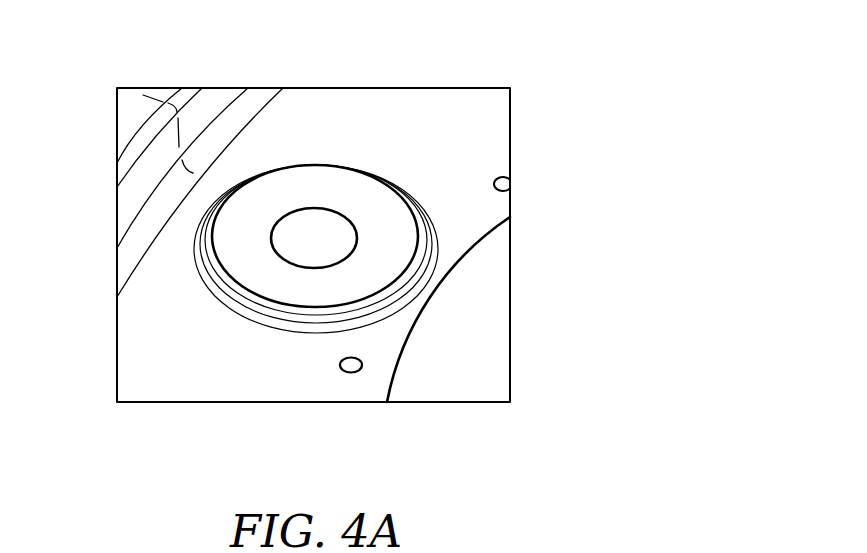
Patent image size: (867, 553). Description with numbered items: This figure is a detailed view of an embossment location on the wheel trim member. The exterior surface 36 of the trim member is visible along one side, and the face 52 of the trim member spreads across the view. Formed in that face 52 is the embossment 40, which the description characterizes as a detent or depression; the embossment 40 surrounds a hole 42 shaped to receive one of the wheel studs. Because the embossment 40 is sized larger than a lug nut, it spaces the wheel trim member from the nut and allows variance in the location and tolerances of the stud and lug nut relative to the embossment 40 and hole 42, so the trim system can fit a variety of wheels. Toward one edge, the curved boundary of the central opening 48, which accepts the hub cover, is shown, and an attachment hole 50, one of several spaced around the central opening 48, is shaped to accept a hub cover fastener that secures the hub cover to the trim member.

The exterior surface 36 is at (132, 117).
The embossment 40 is at (246, 292).
The hole 42 is at (314, 238).
The central opening 48 is at (476, 284).
The attachment hole 50 is at (350, 375).
The face 52 is at (212, 372).